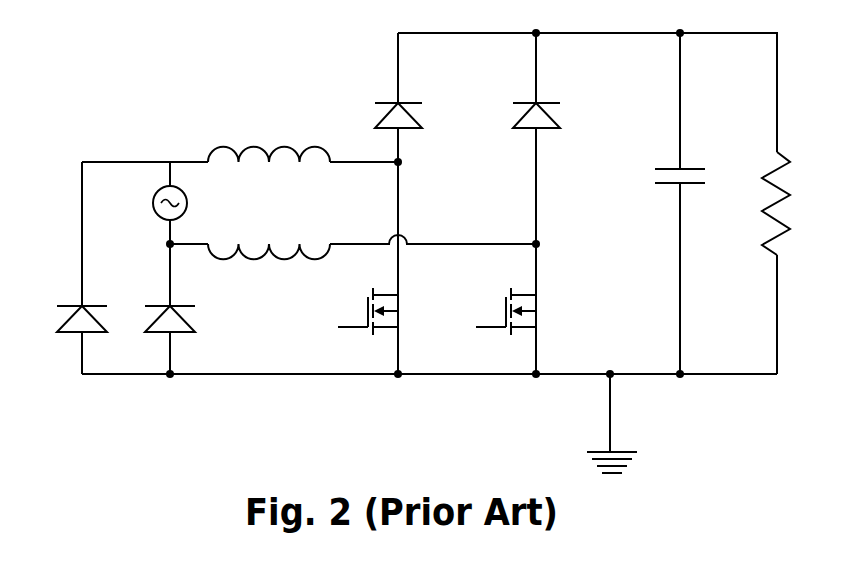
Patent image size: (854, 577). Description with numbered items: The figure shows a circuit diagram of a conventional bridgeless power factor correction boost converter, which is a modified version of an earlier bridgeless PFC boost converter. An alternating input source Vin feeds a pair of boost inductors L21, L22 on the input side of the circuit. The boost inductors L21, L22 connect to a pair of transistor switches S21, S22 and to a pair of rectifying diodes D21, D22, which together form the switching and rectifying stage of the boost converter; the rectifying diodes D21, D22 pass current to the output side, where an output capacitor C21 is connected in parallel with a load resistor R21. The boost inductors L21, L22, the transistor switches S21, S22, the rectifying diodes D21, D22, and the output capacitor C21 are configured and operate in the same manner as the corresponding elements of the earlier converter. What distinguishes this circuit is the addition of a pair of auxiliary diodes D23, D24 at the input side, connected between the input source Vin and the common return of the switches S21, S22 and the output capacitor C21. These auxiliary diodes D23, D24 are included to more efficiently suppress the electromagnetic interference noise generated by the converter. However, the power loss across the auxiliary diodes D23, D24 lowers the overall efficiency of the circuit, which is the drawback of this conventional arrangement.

The rectifying diode D21 is at (424, 115).
The rectifying diode D22 is at (562, 115).
The auxiliary diode D23 is at (57, 319).
The auxiliary diode D24 is at (192, 319).
The boost inductor L21 is at (269, 138).
The boost inductor L22 is at (269, 268).
The AC input voltage source Vin is at (147, 203).
The transistor switch S21 is at (389, 311).
The transistor switch S22 is at (527, 311).
The output capacitor C21 is at (658, 176).
The load resistor R21 is at (800, 203).